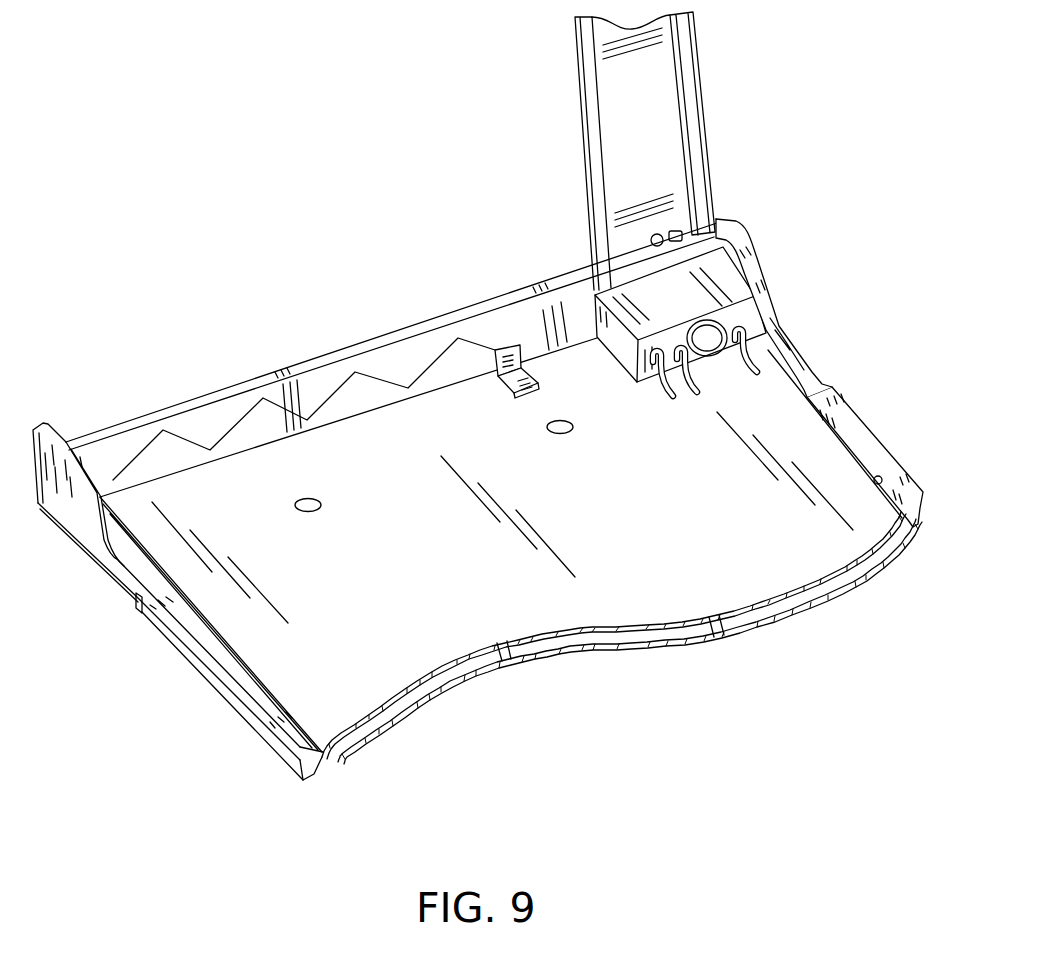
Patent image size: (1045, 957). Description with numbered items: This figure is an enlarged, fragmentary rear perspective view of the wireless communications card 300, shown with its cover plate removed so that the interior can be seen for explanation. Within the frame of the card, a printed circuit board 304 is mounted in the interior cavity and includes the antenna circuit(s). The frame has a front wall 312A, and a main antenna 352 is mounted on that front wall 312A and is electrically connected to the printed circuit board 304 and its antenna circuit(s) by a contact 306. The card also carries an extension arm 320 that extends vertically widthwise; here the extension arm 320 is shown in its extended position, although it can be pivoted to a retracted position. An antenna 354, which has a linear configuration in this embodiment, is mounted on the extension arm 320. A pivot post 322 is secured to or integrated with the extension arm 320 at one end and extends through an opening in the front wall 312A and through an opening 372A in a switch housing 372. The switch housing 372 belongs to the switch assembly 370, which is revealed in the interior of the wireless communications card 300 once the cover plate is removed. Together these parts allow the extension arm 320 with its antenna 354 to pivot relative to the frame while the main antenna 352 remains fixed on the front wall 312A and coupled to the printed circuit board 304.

The wireless communications card 300 is at (273, 140).
The printed circuit board 304 is at (432, 600).
The contact 306 is at (496, 347).
The front wall 312A is at (372, 339).
The extension arm 320 is at (577, 80).
The pivot post 322 is at (752, 341).
The main antenna 352 is at (241, 417).
The antenna 354 is at (678, 86).
The switch assembly 370 is at (593, 270).
The switch housing 372 is at (723, 221).
The opening 372A is at (733, 307).